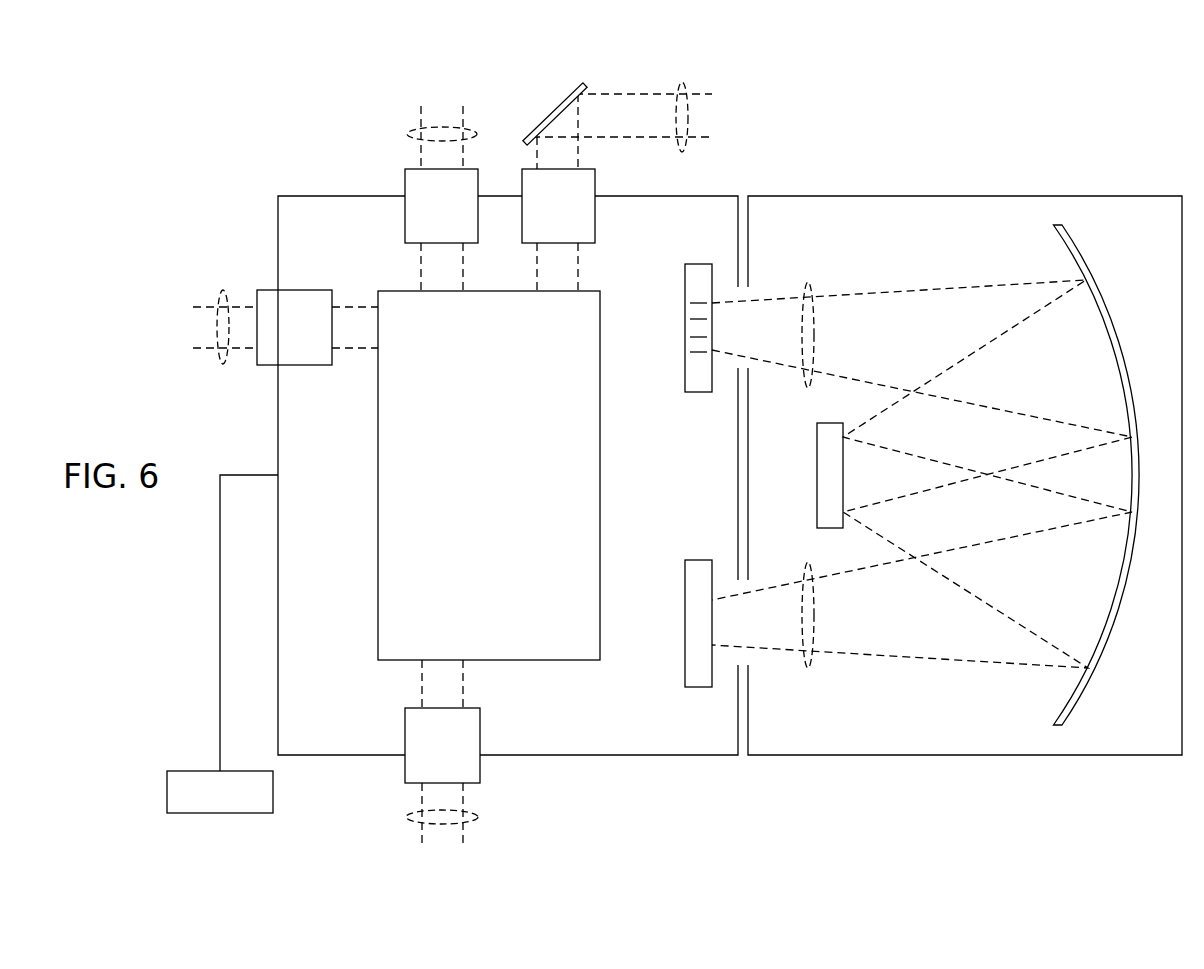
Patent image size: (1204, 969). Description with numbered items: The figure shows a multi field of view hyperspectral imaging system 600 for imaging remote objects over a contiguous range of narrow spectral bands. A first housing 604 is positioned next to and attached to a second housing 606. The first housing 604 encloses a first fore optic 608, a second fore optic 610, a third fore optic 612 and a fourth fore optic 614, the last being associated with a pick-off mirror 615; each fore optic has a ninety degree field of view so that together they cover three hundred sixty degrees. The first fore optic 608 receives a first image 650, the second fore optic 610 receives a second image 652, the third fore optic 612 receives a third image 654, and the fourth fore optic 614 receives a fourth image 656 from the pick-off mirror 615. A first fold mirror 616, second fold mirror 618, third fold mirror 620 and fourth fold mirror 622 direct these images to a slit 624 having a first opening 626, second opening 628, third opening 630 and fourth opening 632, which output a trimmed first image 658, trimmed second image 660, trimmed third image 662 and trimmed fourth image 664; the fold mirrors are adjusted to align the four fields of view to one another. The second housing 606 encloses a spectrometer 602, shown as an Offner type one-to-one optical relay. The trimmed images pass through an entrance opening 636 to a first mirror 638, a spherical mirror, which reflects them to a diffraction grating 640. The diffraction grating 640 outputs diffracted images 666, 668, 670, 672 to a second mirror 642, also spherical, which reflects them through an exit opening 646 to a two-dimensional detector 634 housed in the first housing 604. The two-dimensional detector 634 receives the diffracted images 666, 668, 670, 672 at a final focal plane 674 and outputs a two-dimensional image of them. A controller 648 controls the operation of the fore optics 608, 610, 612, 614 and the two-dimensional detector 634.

The hyperspectral imaging system 600 is at (872, 88).
The spectrometer 602 is at (957, 685).
The first housing 604 is at (300, 196).
The second housing 606 is at (975, 196).
The first fore optic 608 is at (270, 365).
The second fore optic 610 is at (405, 184).
The third fore optic 612 is at (405, 767).
The fourth fore optic 614 is at (595, 186).
The pick-off mirror 615 is at (562, 110).
The first fold mirror 616 is at (489, 475).
The second fold mirror 618 is at (489, 475).
The third fold mirror 620 is at (489, 475).
The fourth fold mirror 622 is at (400, 488).
The slit 624 is at (697, 264).
The first opening 626 is at (695, 303).
The second opening 628 is at (690, 319).
The third opening 630 is at (690, 337).
The fourth opening 632 is at (690, 352).
The 2-dimensional detector 634 is at (685, 666).
The entrance opening 636 is at (750, 366).
The first mirror 638 is at (1058, 250).
The diffraction grating 640 is at (817, 482).
The second mirror 642 is at (1060, 698).
The exit opening 646 is at (739, 591).
The controller 648 is at (197, 813).
The first image 650 is at (222, 290).
The second image 652 is at (408, 134).
The third image 654 is at (478, 816).
The fourth image 656 is at (682, 82).
The trimmed first image 658 is at (848, 304).
The trimmed second image 660 is at (848, 304).
The trimmed third image 662 is at (848, 304).
The trimmed fourth image 664 is at (812, 282).
The diffracted image 666 is at (850, 646).
The diffracted image 668 is at (850, 646).
The diffracted image 670 is at (850, 646).
The diffracted image 672 is at (812, 668).
The final focal plane 674 is at (685, 623).